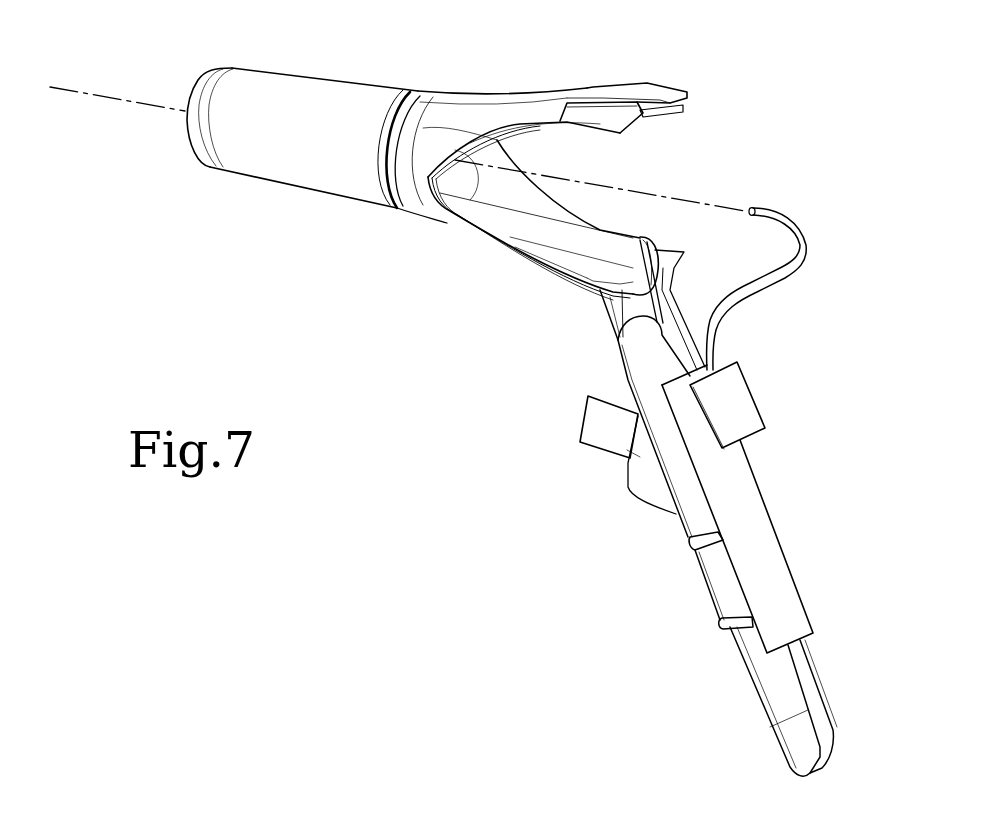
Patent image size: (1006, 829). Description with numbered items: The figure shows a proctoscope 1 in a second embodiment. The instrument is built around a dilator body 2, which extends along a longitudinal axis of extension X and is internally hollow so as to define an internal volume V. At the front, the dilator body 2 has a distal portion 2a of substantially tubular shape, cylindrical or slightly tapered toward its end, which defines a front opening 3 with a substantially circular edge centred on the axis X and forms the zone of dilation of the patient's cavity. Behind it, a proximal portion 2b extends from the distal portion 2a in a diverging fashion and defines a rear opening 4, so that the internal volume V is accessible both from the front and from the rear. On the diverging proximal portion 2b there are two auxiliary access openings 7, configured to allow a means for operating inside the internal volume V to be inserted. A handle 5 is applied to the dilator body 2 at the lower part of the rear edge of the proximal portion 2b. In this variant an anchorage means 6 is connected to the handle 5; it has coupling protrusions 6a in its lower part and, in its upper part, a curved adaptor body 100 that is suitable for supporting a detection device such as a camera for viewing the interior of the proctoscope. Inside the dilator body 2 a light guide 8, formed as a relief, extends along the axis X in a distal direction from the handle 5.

The proctoscope 1 is at (817, 112).
The dilator body 2 is at (424, 72).
The distal portion 2a is at (273, 150).
The proximal portion 2b is at (513, 114).
The front opening 3 is at (162, 124).
The rear opening 4 is at (692, 161).
The handle 5 is at (786, 464).
The anchorage means 6 is at (849, 604).
The coupling protrusions 6a is at (691, 546).
The auxiliary access openings 7 is at (660, 132).
The light guide 8 is at (626, 247).
The adaptor body 100 is at (803, 252).
The internal volume V is at (461, 183).
The longitudinal axis of extension X is at (713, 203).